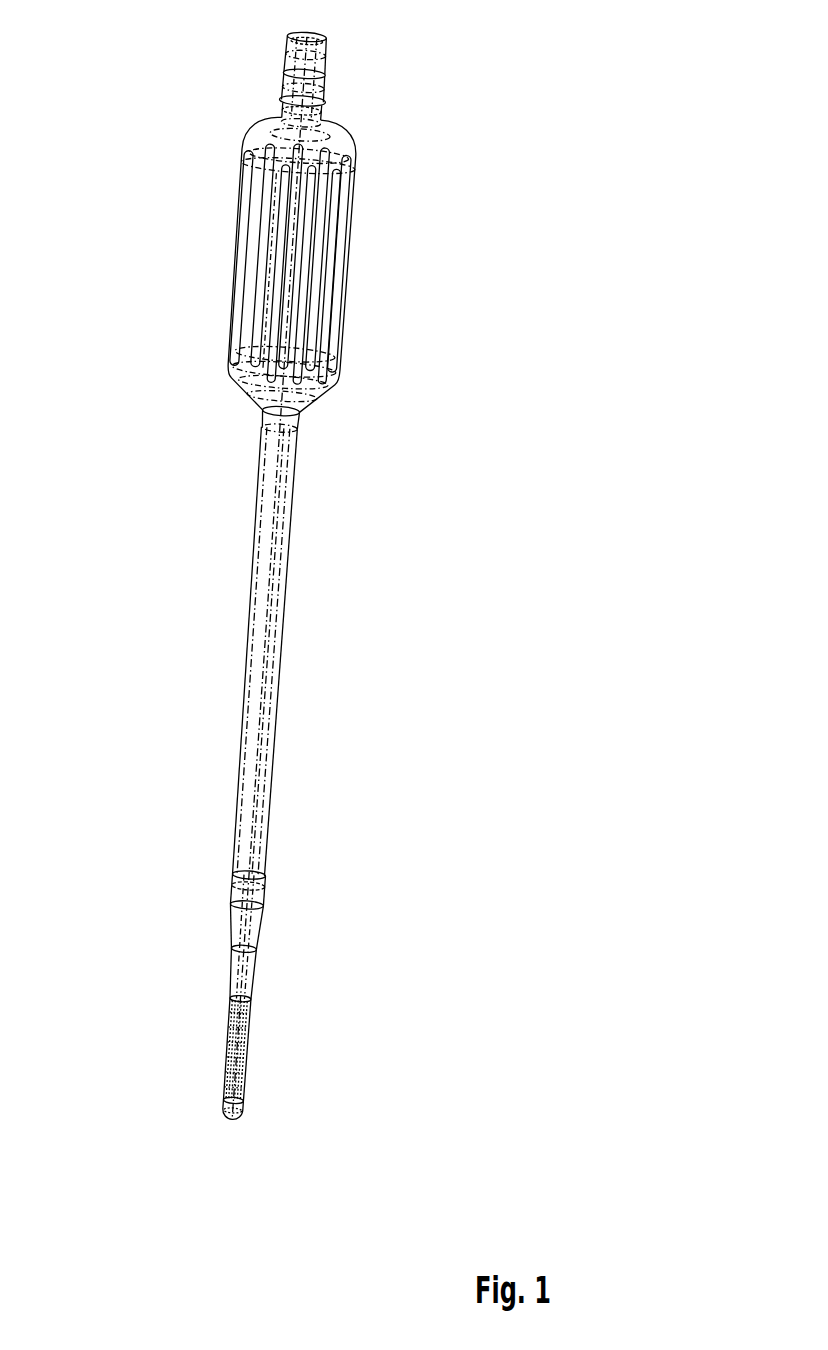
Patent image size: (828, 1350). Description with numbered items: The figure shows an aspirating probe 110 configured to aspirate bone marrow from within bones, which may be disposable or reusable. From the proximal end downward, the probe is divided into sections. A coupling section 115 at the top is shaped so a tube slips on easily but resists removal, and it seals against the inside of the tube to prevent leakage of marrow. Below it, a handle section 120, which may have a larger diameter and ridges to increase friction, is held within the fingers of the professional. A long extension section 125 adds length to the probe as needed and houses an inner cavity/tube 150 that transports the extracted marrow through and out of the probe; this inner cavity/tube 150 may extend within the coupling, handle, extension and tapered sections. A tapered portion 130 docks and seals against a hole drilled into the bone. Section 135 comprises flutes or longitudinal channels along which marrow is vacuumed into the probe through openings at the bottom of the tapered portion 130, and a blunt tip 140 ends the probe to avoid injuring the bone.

The aspirating probe 110 is at (638, 405).
The coupling section 115 is at (200, 35).
The handle section 120 is at (200, 119).
The extension section 125 is at (200, 420).
The tapered portion 130 is at (200, 888).
The flutes/longitudinal channels section 135 is at (200, 1001).
The tip 140 is at (200, 1103).
The inner cavity/tube 150 is at (263, 628).